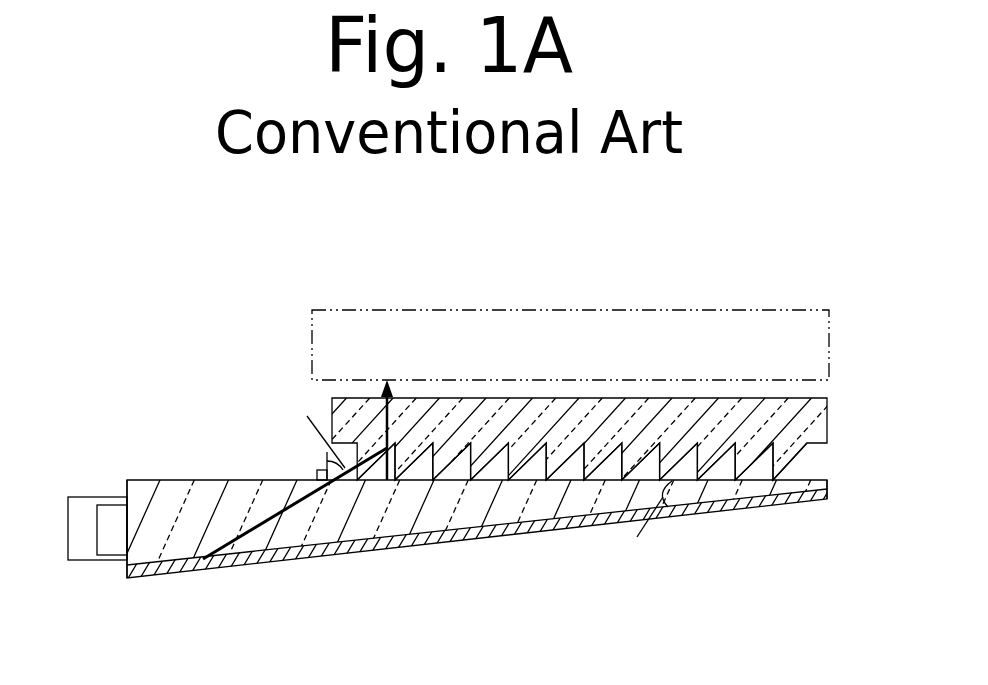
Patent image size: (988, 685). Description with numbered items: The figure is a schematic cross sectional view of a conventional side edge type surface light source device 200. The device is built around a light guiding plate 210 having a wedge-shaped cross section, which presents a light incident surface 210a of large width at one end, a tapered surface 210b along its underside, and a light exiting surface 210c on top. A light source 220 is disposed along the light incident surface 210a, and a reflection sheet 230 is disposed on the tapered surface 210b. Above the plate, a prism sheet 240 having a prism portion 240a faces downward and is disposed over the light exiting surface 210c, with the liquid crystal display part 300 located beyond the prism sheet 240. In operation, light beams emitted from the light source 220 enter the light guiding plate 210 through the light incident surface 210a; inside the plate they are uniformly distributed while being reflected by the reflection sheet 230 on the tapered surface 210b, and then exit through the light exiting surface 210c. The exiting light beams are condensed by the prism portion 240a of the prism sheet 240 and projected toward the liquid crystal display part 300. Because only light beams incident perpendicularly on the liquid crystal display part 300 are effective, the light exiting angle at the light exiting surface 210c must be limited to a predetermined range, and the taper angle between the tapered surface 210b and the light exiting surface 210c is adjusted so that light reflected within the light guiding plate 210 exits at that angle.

The surface light source device 200 is at (448, 217).
The light guiding plate 210 is at (496, 524).
The light incident surface 210a is at (136, 499).
The tapered surface 210b is at (470, 529).
The light exiting surface 210c is at (846, 506).
The light source 220 is at (117, 545).
The reflection sheet 230 is at (392, 540).
The prism sheet 240 is at (585, 398).
The prism portion 240a is at (750, 448).
The liquid crystal display part 300 is at (721, 308).